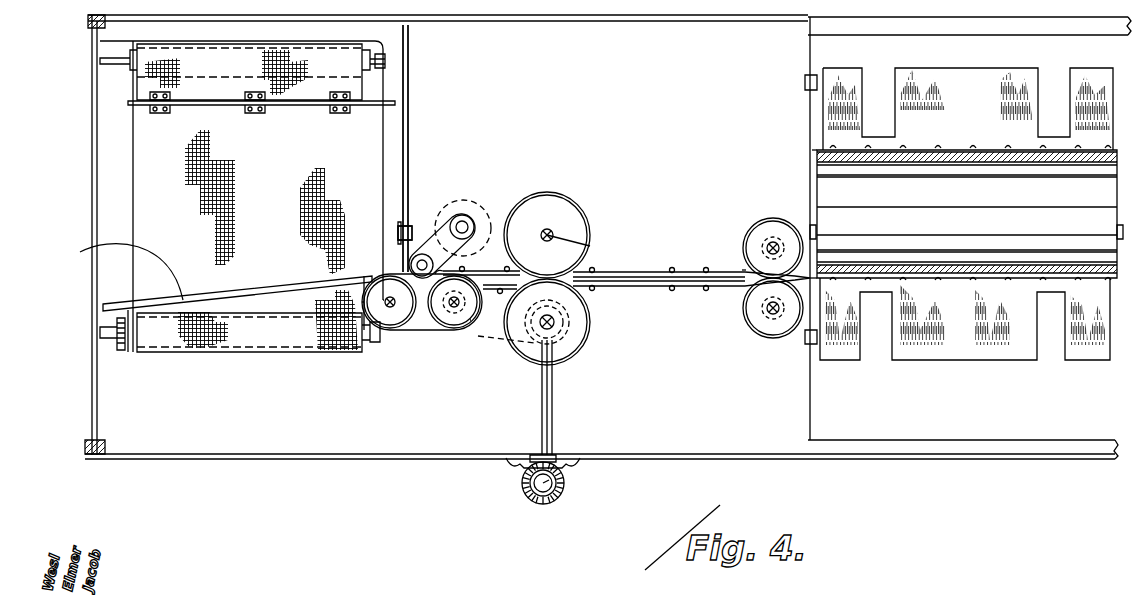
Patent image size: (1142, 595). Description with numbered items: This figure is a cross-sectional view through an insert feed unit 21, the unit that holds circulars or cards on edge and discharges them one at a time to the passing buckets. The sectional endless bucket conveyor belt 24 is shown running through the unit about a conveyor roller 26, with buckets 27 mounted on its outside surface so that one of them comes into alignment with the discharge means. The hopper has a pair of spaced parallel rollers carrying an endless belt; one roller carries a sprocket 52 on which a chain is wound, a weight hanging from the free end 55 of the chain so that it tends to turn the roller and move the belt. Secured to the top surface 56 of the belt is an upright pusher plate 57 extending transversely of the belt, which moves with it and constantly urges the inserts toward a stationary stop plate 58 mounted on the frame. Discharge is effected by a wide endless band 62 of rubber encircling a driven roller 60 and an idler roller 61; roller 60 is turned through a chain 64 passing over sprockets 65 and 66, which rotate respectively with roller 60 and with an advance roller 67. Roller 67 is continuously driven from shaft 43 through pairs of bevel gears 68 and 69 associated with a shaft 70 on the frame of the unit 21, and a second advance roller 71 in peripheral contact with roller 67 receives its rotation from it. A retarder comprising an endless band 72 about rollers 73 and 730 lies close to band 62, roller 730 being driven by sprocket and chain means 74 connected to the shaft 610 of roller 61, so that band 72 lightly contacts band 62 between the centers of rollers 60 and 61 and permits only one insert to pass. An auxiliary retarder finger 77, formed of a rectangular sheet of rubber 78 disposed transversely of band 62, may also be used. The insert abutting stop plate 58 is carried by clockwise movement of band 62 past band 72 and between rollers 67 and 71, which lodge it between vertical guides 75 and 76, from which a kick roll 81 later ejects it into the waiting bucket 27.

The insert feed unit 21 is at (772, 420).
The sectional endless bucket conveyor belt 24 is at (940, 273).
The conveyor roller 26 is at (888, 222).
The bucket 27 is at (1095, 345).
The shaft 43 is at (549, 484).
The sprocket 52 is at (117, 338).
The free end of chain 55 is at (104, 317).
The top surface of belt 56 is at (163, 164).
The pusher plate 57 is at (142, 104).
The stationary stop plate 58 is at (119, 270).
The driven roller 60 is at (405, 322).
The idler roller 61 is at (455, 318).
The shaft of roller 610 is at (470, 340).
The wide endless band 62 is at (398, 318).
The chain 64 is at (494, 305).
The sprocket 65 is at (389, 336).
The sprocket 66 is at (575, 322).
The advance roller 67 is at (583, 307).
The bevel gears 68 is at (567, 333).
The bevel gears 69 is at (555, 478).
The shaft 70 is at (553, 398).
The second advance roller 71 is at (590, 246).
The endless band 72 is at (470, 222).
The roller 73 is at (423, 253).
The roller 730 is at (472, 210).
The sprocket and chain means 74 is at (507, 265).
The vertical guide 75 is at (655, 272).
The vertical guide 76 is at (700, 288).
The finger 77 is at (383, 300).
The rectangular sheet of rubber 78 is at (398, 252).
The kick roll 81 is at (790, 296).